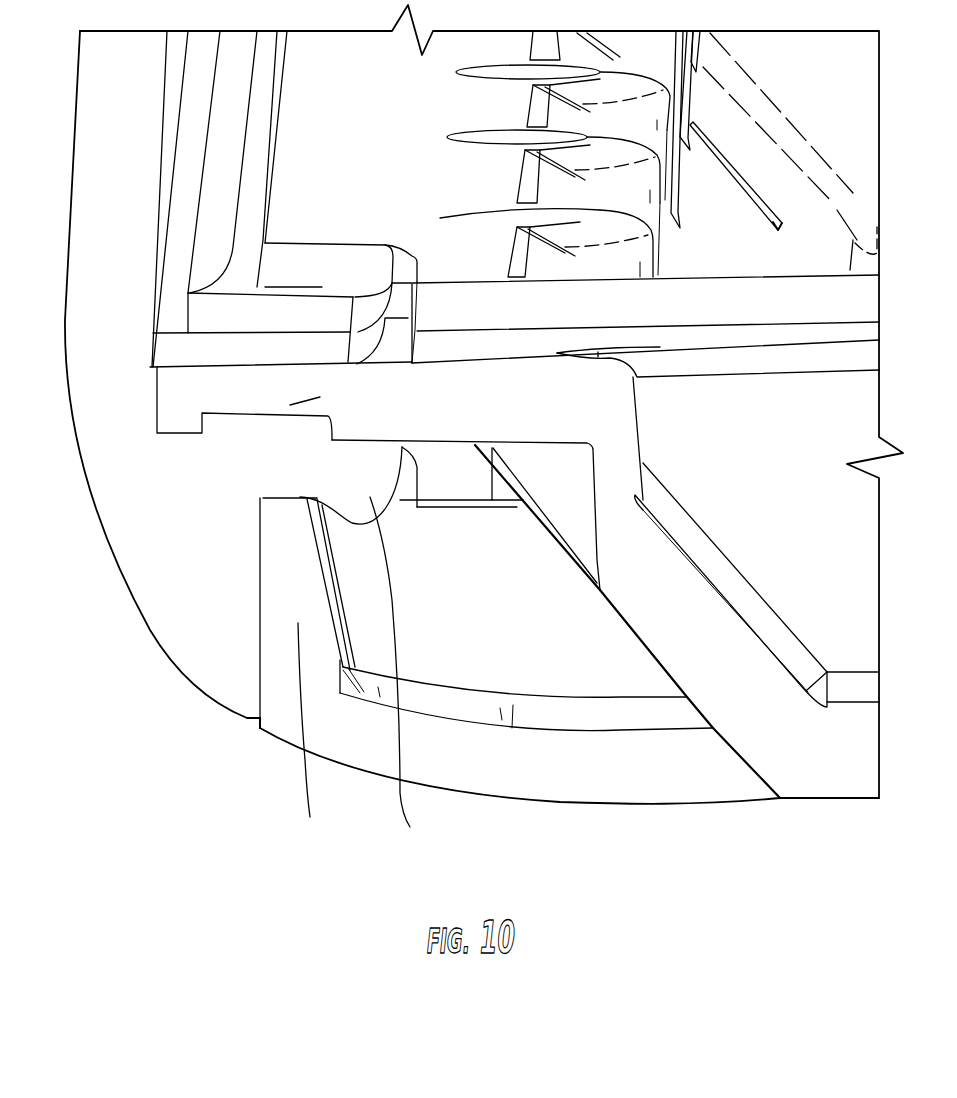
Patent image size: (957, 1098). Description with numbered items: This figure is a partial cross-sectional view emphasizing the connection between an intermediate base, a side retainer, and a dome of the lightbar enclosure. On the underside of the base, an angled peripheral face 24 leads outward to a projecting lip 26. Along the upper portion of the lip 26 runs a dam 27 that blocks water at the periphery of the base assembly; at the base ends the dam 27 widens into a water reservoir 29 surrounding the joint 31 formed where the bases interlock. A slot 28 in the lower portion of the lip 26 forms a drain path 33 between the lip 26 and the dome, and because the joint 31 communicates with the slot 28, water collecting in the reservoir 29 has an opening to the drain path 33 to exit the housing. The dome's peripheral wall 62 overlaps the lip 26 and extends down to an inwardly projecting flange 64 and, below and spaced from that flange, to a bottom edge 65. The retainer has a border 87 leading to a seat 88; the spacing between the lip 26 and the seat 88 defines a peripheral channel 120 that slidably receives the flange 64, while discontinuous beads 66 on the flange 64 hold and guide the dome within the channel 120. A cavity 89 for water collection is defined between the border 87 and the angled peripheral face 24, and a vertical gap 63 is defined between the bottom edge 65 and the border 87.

The angled peripheral face 24 is at (640, 637).
The lip 26 is at (228, 432).
The dam 27 is at (248, 213).
The slot 28 is at (212, 421).
The water reservoir 29 is at (332, 245).
The joint 31 is at (190, 333).
The drain path 33 is at (222, 430).
The peripheral wall 62 is at (92, 275).
The vertical gap 63 is at (263, 653).
The flange 64 is at (280, 473).
The bottom edge 65 is at (242, 637).
The beads 66 is at (396, 678).
The border 87 is at (308, 739).
The seat 88 is at (270, 500).
The cavity 89 is at (488, 623).
The peripheral channel 120 is at (345, 673).